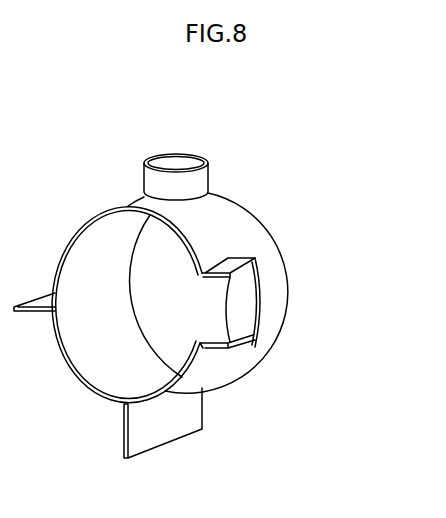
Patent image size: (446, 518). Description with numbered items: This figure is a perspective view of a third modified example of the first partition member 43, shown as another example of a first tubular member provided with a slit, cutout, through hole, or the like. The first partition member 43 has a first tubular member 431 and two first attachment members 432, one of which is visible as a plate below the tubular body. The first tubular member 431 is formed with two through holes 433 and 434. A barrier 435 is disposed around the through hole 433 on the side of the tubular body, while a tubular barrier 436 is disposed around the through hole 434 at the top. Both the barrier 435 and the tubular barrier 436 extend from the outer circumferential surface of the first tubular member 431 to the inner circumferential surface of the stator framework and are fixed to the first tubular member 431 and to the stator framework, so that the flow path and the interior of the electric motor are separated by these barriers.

The first partition member 43 is at (366, 137).
The first tubular member 431 is at (233, 218).
The first attachment member 432 is at (172, 430).
The through hole 433 is at (216, 323).
The through hole 434 is at (183, 157).
The barrier 435 is at (262, 282).
The tubular barrier 436 is at (199, 155).